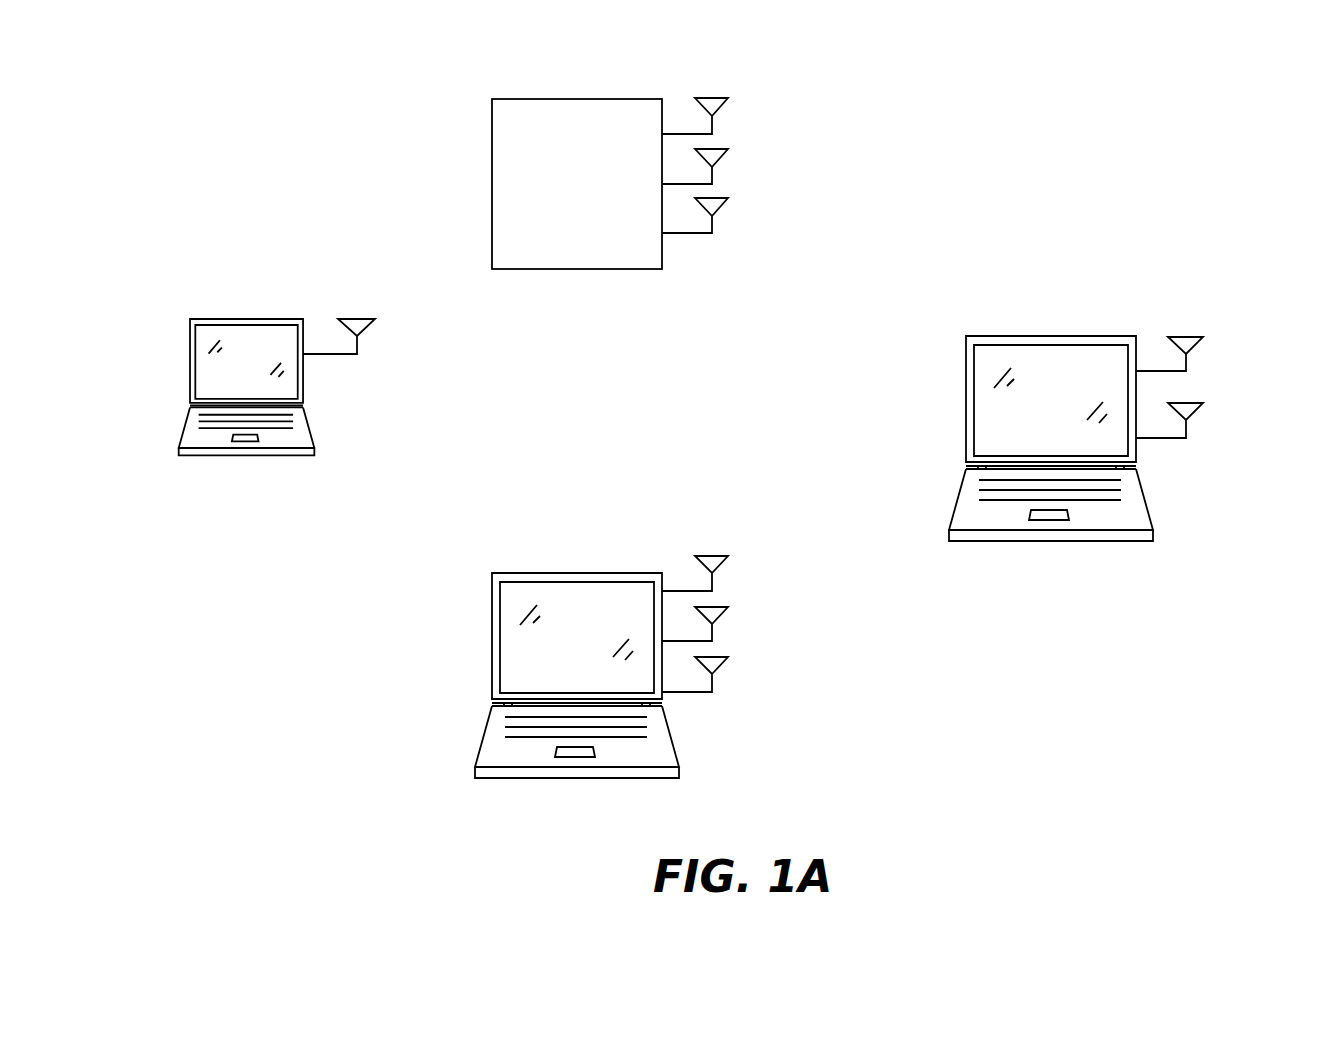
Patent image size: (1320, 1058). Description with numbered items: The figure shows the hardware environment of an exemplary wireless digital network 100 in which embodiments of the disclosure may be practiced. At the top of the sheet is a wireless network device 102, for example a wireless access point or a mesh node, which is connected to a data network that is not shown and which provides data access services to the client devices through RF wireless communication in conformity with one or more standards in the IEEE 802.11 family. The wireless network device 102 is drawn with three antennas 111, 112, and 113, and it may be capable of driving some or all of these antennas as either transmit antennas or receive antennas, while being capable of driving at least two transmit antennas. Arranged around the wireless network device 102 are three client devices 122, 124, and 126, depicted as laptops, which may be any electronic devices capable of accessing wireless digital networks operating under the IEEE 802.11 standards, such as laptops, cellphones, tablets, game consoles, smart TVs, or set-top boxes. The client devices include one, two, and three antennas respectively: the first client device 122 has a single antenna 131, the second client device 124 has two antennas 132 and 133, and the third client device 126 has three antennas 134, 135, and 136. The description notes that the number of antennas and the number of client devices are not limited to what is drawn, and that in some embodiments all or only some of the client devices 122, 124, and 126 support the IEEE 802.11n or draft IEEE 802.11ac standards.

The wireless digital network 100 is at (1102, 126).
The wireless network device 102 is at (526, 98).
The antenna 111 is at (727, 104).
The antenna 112 is at (727, 155).
The antenna 113 is at (727, 204).
The client device 122 is at (208, 318).
The client device 124 is at (992, 335).
The client device 126 is at (527, 573).
The antenna 131 is at (373, 325).
The antenna 132 is at (1201, 343).
The antenna 133 is at (1201, 409).
The antenna 134 is at (727, 562).
The antenna 135 is at (727, 613).
The antenna 136 is at (727, 663).